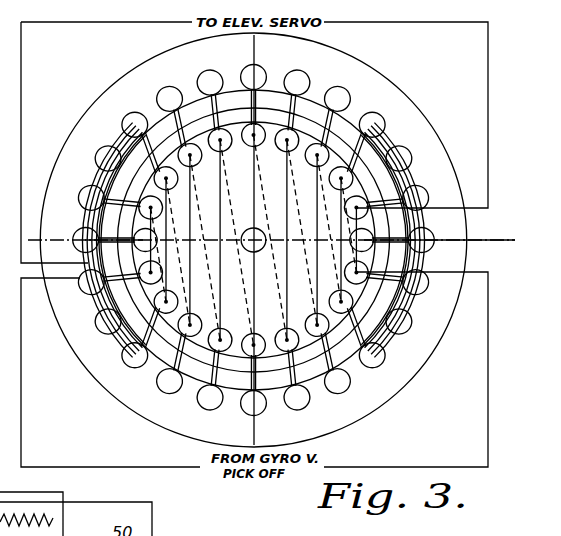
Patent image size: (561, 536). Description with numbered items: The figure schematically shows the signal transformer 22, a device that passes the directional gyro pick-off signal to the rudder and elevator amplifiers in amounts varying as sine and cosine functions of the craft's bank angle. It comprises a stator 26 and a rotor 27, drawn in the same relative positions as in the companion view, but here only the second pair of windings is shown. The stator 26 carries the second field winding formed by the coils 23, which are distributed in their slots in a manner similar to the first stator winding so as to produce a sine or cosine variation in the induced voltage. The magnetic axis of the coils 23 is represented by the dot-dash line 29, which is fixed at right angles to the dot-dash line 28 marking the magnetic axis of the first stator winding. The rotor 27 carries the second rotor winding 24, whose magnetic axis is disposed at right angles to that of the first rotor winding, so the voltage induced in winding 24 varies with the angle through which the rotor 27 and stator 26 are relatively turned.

The signal transformer 22 is at (127, 412).
The second field winding coils 23 is at (82, 215).
The second rotor winding 24 is at (250, 183).
The stator 26 is at (392, 88).
The rotor 27 is at (160, 320).
The magnetic axis of stator winding 21 28 is at (257, 46).
The magnetic axis of stator winding 23 29 is at (487, 243).